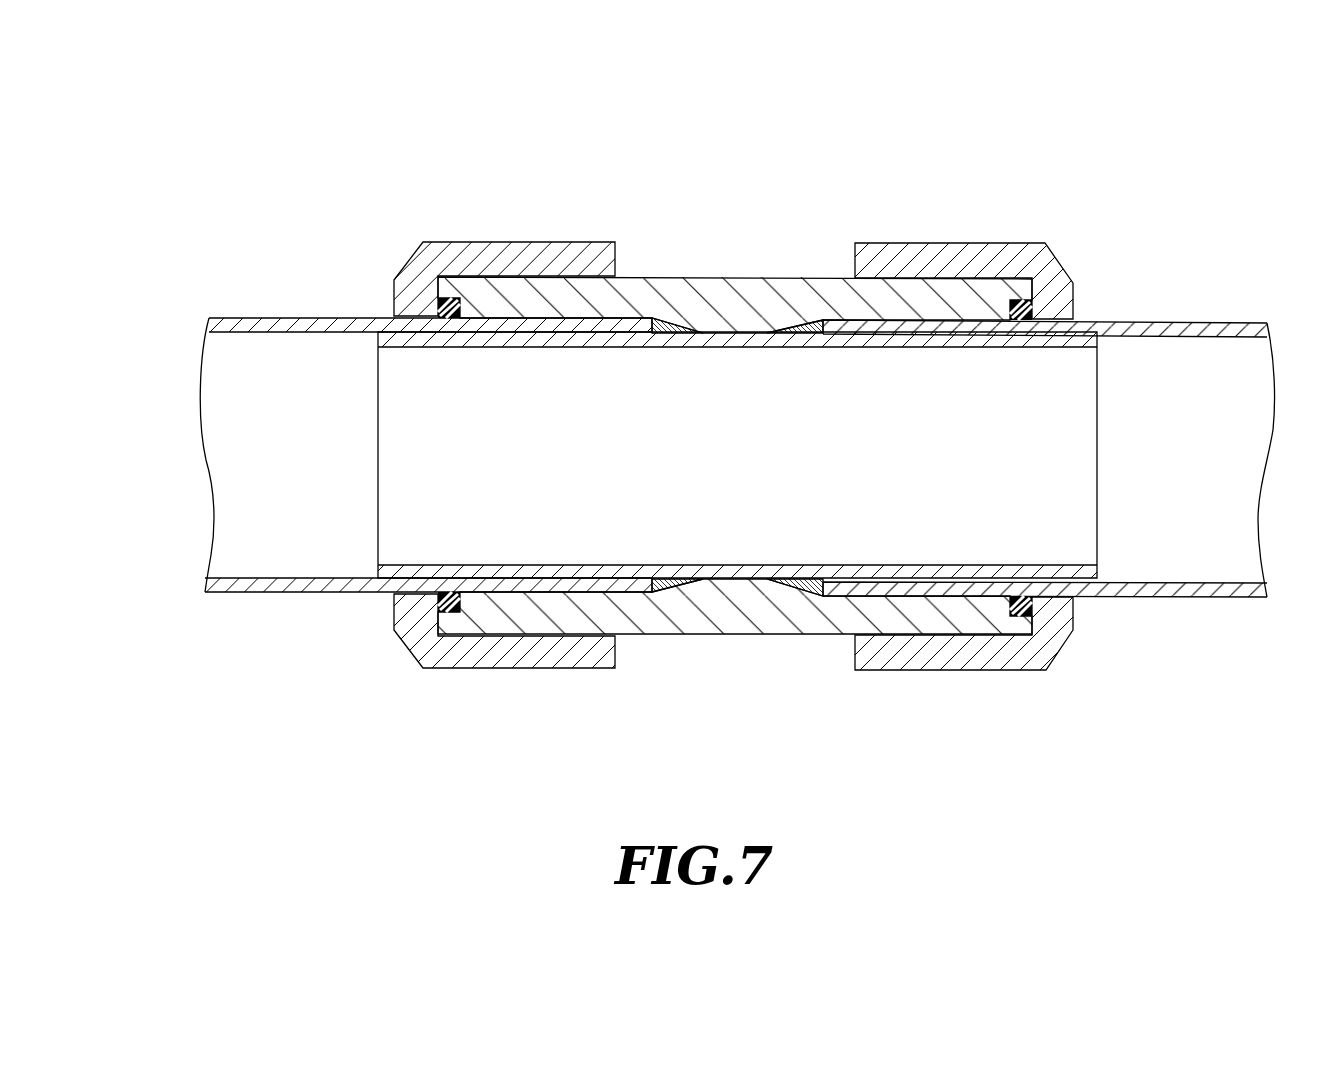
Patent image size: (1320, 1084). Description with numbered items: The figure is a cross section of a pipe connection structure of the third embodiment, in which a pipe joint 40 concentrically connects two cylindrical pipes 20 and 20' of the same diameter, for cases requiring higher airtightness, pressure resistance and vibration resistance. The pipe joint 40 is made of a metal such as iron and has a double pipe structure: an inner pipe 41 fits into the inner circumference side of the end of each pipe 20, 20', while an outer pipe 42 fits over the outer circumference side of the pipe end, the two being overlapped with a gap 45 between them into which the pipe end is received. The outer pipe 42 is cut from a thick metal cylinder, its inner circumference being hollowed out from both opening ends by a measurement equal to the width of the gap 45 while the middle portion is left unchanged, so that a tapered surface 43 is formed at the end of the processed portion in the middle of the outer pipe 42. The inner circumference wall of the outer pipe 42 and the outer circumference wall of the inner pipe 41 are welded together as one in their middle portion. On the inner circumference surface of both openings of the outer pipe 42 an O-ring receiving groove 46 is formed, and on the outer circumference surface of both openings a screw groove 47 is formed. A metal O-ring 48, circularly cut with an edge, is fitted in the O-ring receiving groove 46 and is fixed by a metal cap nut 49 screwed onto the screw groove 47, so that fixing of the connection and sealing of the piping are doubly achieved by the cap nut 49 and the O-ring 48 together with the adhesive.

The cylindrical pipe 20 is at (1049, 375).
The cylindrical pipe 20' is at (426, 396).
The pipe joint 40 is at (993, 213).
The inner pipe 41 is at (1083, 322).
The outer pipe 42 is at (758, 278).
The tapered surface 43 is at (675, 322).
The gap 45 is at (915, 320).
The O-ring receiving groove 46 is at (430, 293).
The screw groove 47 is at (560, 276).
The O-ring 48 is at (452, 613).
The cap nut 49 is at (565, 670).